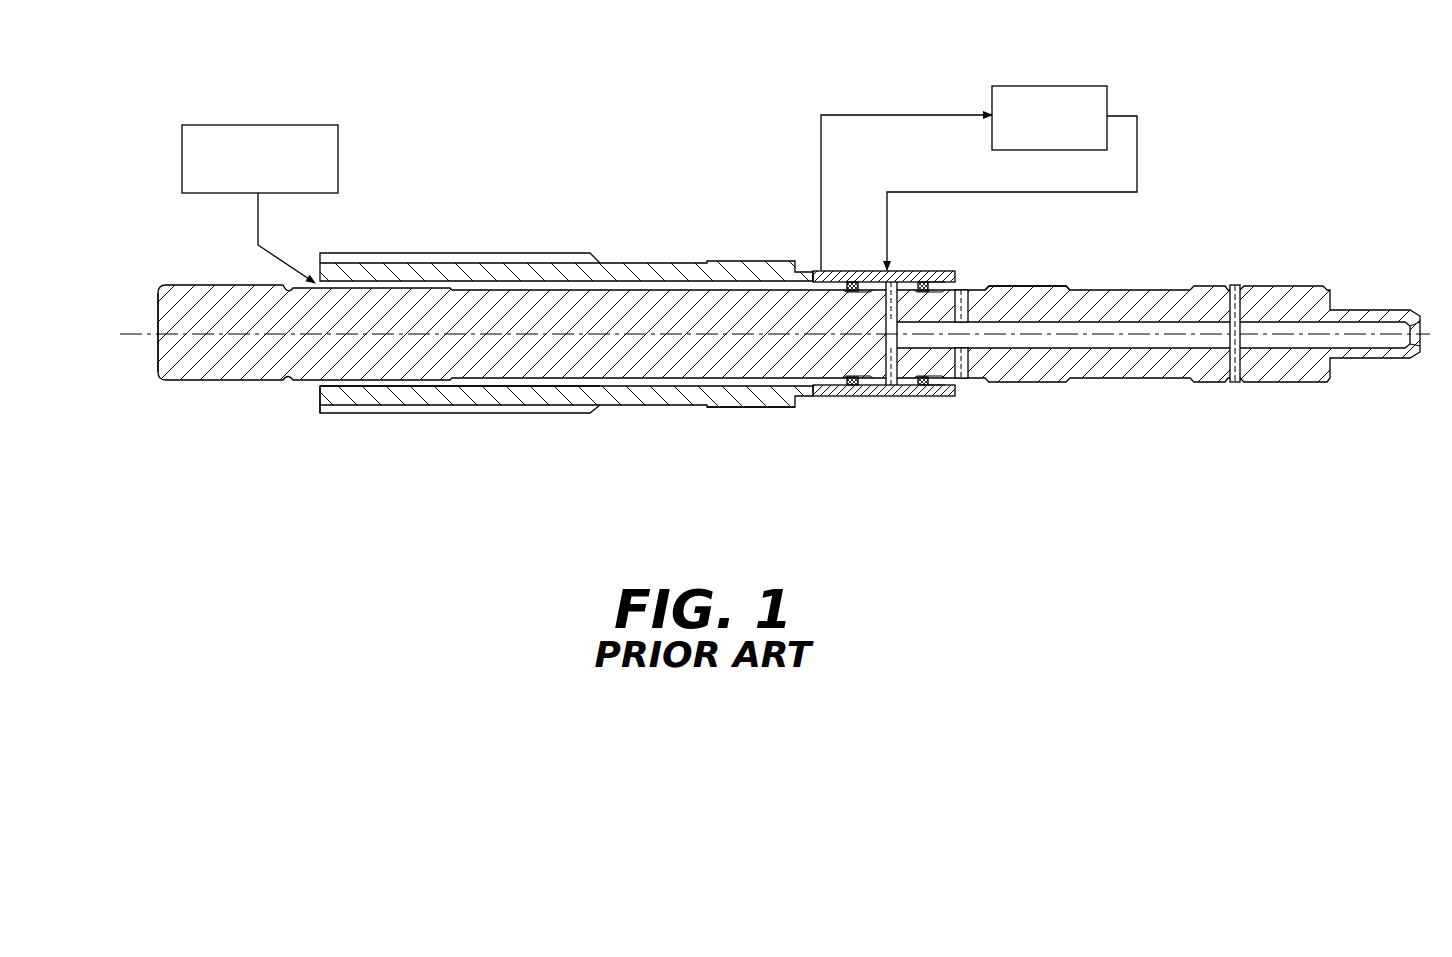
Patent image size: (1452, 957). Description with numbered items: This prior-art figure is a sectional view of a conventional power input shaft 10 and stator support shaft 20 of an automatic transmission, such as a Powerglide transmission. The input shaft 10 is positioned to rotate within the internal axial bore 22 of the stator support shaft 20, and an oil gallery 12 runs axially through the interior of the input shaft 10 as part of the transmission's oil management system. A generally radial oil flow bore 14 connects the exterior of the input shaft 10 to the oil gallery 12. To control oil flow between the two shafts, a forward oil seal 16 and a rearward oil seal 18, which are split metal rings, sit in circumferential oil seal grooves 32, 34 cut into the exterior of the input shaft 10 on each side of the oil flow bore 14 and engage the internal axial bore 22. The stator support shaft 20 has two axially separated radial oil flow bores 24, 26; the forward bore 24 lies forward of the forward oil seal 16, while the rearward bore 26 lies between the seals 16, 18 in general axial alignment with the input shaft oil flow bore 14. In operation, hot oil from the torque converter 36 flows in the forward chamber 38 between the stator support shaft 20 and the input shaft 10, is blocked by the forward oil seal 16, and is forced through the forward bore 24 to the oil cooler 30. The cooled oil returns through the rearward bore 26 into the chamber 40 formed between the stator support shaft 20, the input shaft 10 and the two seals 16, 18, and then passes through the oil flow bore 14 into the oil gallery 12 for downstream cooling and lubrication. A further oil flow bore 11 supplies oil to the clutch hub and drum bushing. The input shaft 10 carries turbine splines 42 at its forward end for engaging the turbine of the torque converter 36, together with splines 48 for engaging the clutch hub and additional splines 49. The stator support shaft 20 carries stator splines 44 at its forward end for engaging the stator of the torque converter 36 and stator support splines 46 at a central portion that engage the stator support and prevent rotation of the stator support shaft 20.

The power input shaft 10 is at (1225, 412).
The oil flow bore 11 is at (965, 330).
The oil gallery 12 is at (1148, 330).
The radial oil flow bore 14 is at (878, 318).
The forward oil seal 16 is at (857, 282).
The rearward oil seal 18 is at (925, 283).
The stator support shaft 20 is at (607, 400).
The internal axial bore 22 is at (535, 387).
The forward stator support shaft oil flow bore 24 is at (817, 270).
The rearward stator support shaft oil flow bore 26 is at (880, 268).
The oil cooler 30 is at (1045, 86).
The oil seal groove 32 is at (848, 294).
The oil seal groove 34 is at (938, 296).
The torque converter 36 is at (268, 125).
The forward chamber 38 is at (558, 272).
The chamber 40 is at (910, 282).
The turbine splines 42 is at (256, 382).
The stator splines 44 is at (455, 413).
The stator support splines 46 is at (748, 408).
The splines 48 is at (1037, 287).
The splines 49 is at (1209, 286).